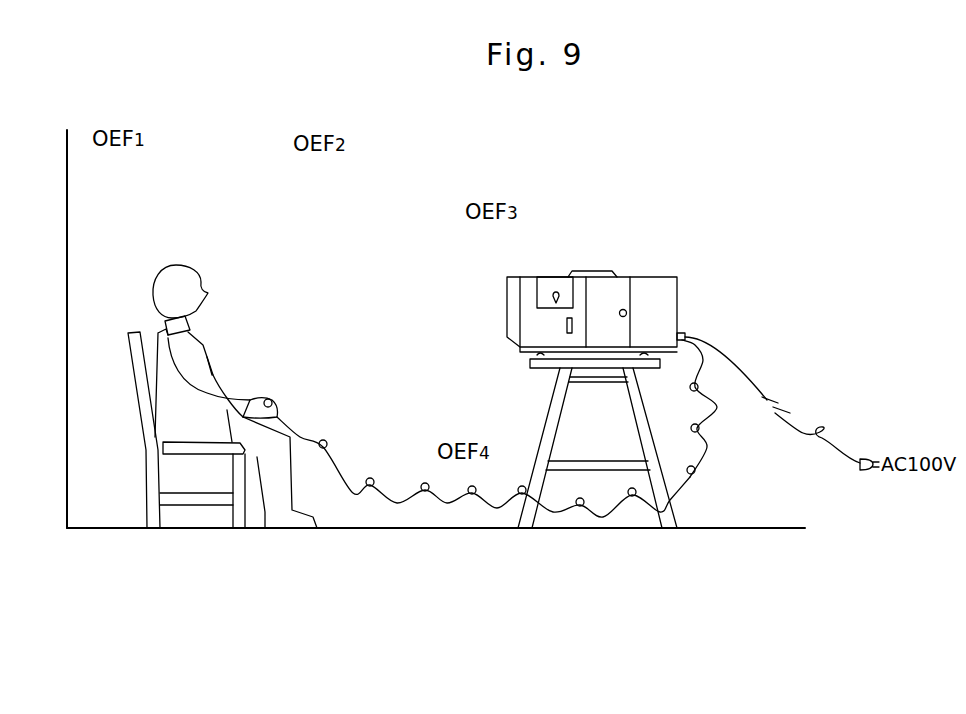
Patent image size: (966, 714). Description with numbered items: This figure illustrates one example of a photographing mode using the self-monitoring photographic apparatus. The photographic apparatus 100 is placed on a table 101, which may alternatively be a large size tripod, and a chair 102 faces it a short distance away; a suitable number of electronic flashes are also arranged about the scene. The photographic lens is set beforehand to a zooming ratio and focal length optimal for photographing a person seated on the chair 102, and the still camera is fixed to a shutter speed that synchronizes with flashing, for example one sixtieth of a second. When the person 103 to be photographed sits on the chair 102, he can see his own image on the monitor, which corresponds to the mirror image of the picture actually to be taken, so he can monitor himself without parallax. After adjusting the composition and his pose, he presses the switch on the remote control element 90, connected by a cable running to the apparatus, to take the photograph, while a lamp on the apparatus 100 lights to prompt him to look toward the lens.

The remote control element 90 is at (273, 400).
The photographic apparatus 100 is at (650, 259).
The table 101 is at (553, 402).
The chair 102 is at (150, 467).
The person 103 is at (205, 338).